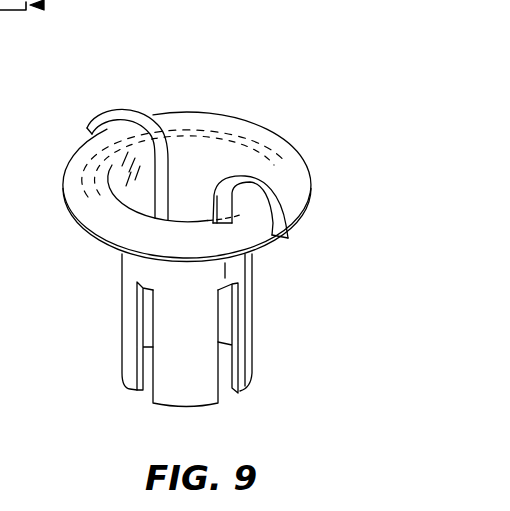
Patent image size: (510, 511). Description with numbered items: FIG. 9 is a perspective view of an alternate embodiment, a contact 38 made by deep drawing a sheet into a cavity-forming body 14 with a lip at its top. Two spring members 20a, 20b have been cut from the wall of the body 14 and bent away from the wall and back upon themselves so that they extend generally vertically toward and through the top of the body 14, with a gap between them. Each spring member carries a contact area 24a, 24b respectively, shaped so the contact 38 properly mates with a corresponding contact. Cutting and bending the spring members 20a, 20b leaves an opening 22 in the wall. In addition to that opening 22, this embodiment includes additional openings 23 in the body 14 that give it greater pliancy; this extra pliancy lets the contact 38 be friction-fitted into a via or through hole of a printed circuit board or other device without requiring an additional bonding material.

The contact 38 is at (312, 96).
The body 14 is at (253, 305).
The spring member 20a is at (154, 190).
The spring member 20b is at (237, 210).
The contact area 24a is at (132, 113).
The contact area 24b is at (237, 210).
The opening 22 is at (240, 402).
The additional openings 23 is at (140, 402).